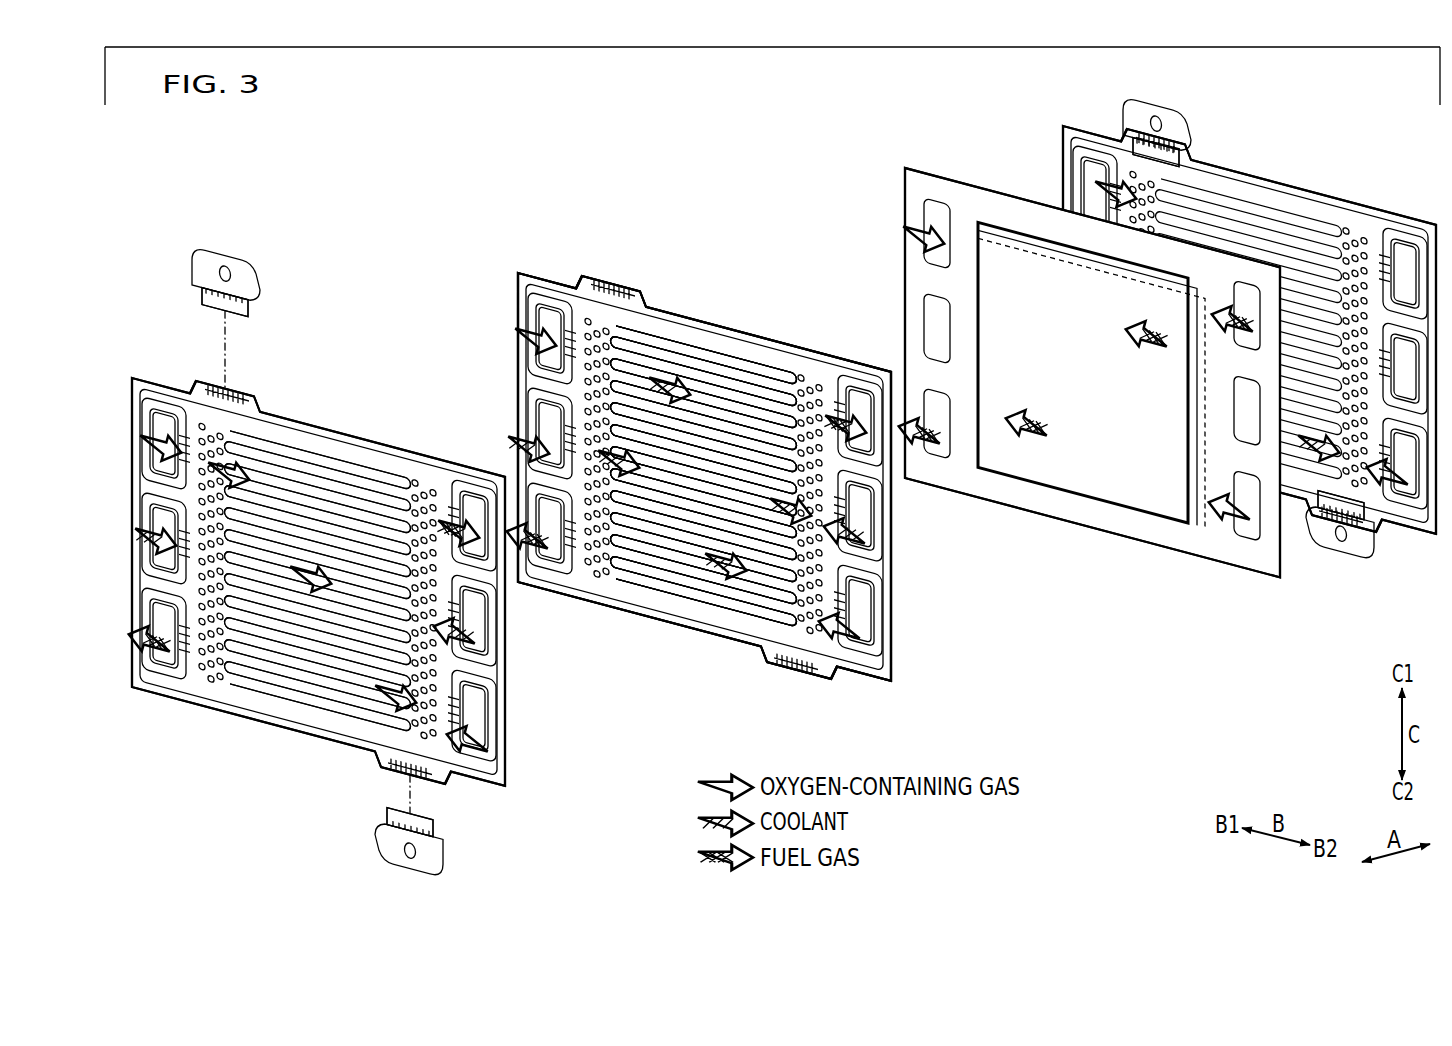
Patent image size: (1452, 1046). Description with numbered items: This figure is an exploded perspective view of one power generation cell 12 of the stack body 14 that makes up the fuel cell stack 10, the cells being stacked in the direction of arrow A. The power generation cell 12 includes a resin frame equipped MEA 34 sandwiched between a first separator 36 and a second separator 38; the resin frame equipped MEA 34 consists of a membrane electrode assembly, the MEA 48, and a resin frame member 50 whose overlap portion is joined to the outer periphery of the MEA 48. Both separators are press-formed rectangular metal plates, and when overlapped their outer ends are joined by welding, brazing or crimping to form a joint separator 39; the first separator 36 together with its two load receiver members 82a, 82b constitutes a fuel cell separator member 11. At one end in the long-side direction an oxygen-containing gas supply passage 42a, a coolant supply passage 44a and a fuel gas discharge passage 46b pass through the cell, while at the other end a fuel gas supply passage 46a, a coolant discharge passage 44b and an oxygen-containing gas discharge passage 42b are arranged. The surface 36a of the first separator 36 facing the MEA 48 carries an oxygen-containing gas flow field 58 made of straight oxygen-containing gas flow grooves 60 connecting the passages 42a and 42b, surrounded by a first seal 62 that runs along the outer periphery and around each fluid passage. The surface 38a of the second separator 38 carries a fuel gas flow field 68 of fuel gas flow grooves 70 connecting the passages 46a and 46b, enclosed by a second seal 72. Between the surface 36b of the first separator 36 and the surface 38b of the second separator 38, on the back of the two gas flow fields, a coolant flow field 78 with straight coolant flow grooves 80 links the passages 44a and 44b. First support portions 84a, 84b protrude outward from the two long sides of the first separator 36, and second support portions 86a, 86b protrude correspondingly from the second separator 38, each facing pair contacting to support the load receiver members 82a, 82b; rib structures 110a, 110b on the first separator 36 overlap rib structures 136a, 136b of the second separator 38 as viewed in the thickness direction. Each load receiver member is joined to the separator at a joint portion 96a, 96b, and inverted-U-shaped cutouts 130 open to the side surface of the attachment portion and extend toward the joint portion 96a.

The fuel cell stack 10 is at (458, 113).
The stack body 14 is at (495, 113).
The fuel cell separator member 11 is at (383, 437).
The power generation cell 12 is at (785, 140).
The resin frame equipped MEA 34 is at (845, 118).
The membrane electrode assembly 48 is at (985, 214).
The resin frame member 50 is at (990, 232).
The first separator 36 is at (150, 380).
The second separator 38 is at (518, 272).
The joint separator 39 is at (1012, 75).
The oxygen-containing gas supply passage 42a is at (155, 415).
The oxygen-containing gas discharge passage 42b is at (478, 722).
The coolant supply passage 44a is at (178, 545).
The coolant discharge passage 44b is at (480, 645).
The fuel gas supply passage 46a is at (462, 498).
The fuel gas discharge passage 46b is at (165, 652).
The oxygen-containing gas flow field 58 is at (340, 468).
The oxygen-containing gas flow grooves 60 is at (803, 419).
The first seal 62 is at (333, 723).
The surface of first separator 36a is at (278, 716).
The surface of first separator 36b is at (292, 718).
The surface of second separator 38a is at (638, 603).
The surface of second separator 38b is at (625, 602).
The fuel gas flow field 68 is at (697, 360).
The fuel gas flow grooves 70 is at (704, 445).
The second seal 72 is at (668, 607).
The coolant flow field 78 is at (720, 598).
The coolant flow grooves 80 is at (704, 534).
The first support portion 84a is at (237, 393).
The first support portion 84b is at (440, 785).
The second support portion 86a is at (598, 277).
The second support portion 86b is at (765, 658).
The rib structure 110a is at (245, 412).
The rib structure 110b is at (388, 753).
The rib structure 136a is at (633, 305).
The rib structure 136b is at (815, 660).
The load receiver member 82a is at (212, 246).
The load receiver member 82b is at (375, 850).
The joint portion 96a is at (1165, 140).
The second joint portion 96b is at (1357, 523).
The cutouts 130 is at (250, 306).